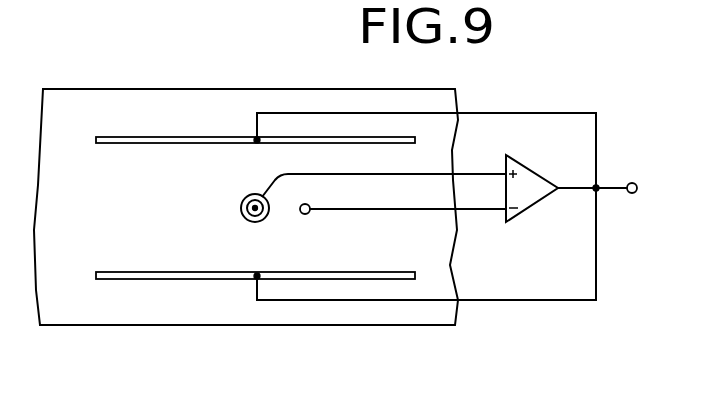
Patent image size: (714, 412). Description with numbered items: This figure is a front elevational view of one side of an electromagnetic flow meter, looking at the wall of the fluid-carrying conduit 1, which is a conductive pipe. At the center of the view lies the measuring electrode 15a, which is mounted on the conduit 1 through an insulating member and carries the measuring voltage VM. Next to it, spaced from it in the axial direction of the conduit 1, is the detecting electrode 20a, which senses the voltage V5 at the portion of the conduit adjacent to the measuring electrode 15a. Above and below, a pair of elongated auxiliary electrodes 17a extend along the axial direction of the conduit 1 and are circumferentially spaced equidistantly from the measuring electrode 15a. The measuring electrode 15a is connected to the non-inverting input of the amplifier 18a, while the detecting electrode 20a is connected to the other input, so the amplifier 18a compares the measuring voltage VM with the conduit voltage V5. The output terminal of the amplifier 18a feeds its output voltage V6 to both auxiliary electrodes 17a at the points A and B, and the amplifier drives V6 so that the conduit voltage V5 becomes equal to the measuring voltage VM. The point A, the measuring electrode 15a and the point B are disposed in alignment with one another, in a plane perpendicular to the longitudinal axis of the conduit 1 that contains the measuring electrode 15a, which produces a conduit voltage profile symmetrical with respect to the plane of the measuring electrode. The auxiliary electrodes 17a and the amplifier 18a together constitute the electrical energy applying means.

The substrate 1 is at (95, 319).
The elongated auxiliary electrodes 17a is at (139, 137).
The measuring electrode 15a is at (248, 218).
The detecting electrode 20a is at (304, 214).
The amplifier 18a is at (536, 210).
The point A is at (255, 138).
The point B is at (254, 279).
The measuring electrode voltage VM is at (262, 196).
The conduit voltage V5 is at (370, 210).
The output voltage V6 is at (496, 112).